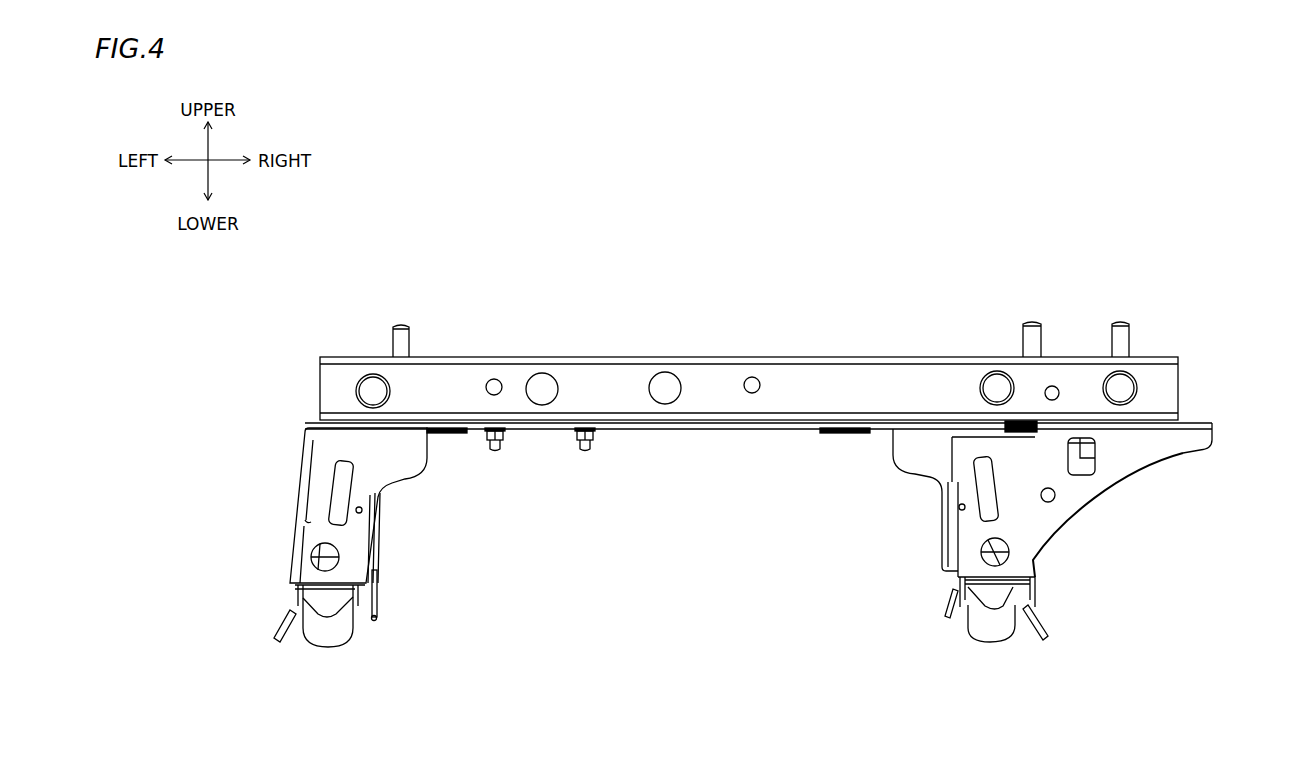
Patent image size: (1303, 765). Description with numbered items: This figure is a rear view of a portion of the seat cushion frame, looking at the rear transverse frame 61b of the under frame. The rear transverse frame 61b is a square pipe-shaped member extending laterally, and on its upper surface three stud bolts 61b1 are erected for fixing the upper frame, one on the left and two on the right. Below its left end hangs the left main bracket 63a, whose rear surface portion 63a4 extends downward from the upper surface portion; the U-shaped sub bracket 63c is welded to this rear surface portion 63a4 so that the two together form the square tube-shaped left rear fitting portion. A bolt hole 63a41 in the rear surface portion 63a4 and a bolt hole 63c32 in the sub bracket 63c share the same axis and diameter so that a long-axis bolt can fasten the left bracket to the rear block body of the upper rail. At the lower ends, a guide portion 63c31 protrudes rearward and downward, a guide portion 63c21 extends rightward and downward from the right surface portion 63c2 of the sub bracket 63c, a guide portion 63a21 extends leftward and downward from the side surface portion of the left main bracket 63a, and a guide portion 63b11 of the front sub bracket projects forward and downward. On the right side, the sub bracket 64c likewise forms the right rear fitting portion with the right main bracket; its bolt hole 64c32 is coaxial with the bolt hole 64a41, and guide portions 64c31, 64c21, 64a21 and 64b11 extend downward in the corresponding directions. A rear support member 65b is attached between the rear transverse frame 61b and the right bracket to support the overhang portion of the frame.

The rear transverse frame 61b is at (690, 357).
The stud bolt 61b1 is at (399, 322).
The left main bracket 63a is at (272, 535).
The rear surface portion 63a4 is at (315, 498).
The bolt hole 63a41 is at (228, 550).
The bolt hole 63c32 is at (312, 548).
The guide portion 63a21 is at (283, 620).
The sub bracket 63c is at (382, 542).
The right surface portion 63c2 is at (380, 585).
The guide portion 63c21 is at (377, 620).
The guide portion 63c31 is at (335, 605).
The guide portion 63b11 is at (312, 640).
The sub bracket 64c is at (942, 530).
The bolt hole 64a41 is at (1100, 550).
The bolt hole 64c32 is at (1010, 550).
The guide portion 64a21 is at (1047, 625).
The guide portion 64c21 is at (947, 615).
The guide portion 64b11 is at (975, 632).
The guide portion 64c31 is at (1003, 600).
The rear support member 65b is at (1178, 456).